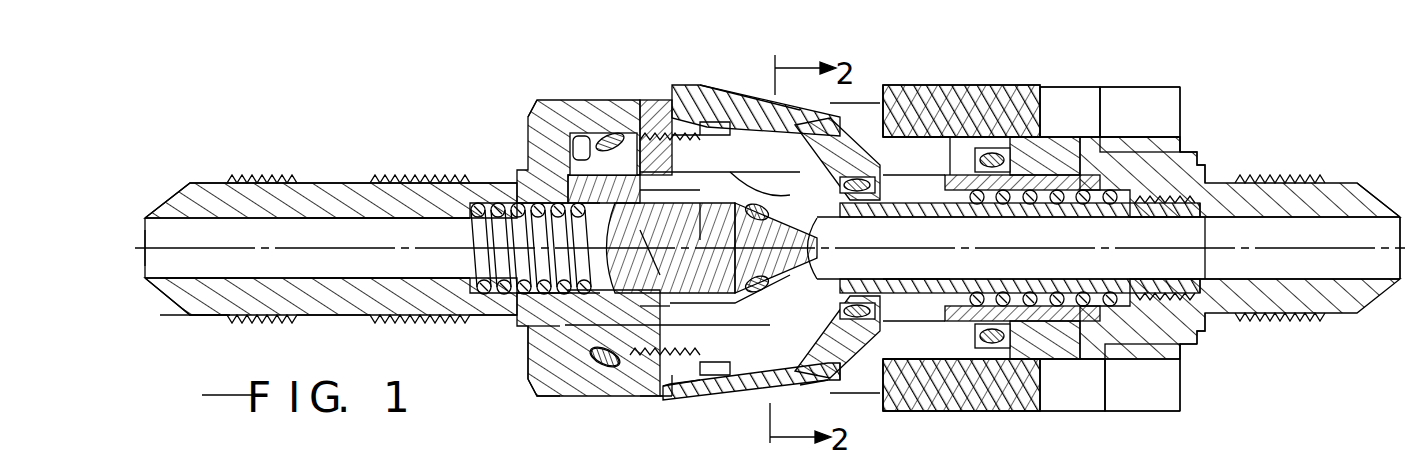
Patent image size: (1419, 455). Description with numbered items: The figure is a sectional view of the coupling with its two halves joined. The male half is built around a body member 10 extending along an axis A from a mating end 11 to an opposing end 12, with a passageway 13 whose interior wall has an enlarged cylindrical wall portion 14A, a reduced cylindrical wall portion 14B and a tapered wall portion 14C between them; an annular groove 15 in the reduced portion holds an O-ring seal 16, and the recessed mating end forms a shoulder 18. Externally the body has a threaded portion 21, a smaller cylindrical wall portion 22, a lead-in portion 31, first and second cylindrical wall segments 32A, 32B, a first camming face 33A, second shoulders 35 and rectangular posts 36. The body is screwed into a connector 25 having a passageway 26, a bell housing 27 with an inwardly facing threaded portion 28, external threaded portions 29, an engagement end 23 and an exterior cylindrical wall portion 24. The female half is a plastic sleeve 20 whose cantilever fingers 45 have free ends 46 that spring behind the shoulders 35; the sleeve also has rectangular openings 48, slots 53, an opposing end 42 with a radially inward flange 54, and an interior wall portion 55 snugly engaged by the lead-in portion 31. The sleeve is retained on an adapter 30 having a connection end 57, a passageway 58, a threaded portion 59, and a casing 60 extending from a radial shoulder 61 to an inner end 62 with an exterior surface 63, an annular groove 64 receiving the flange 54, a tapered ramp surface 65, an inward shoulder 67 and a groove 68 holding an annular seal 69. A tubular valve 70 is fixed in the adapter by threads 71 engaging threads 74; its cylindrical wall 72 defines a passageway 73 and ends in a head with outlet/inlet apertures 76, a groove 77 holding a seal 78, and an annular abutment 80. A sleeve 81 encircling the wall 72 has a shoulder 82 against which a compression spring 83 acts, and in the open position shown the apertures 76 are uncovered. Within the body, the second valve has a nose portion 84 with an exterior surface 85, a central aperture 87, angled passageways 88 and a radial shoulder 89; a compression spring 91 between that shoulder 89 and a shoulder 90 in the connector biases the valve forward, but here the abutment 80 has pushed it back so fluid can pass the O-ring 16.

The body member 10 is at (576, 120).
The mating end 11 is at (940, 85).
The opposing end 12 is at (545, 140).
The passageway 13 is at (700, 280).
The enlarged cylindrical wall portion 14A is at (600, 133).
The reduced cylindrical wall portion 14B is at (760, 338).
The tapered wall portion 14C is at (728, 192).
The annular groove 15 is at (900, 100).
The O-ring seal 16 is at (872, 292).
The shoulder 18 is at (961, 381).
The sleeve 20 is at (680, 78).
The threaded portion 21 is at (656, 100).
The cylindrical wall portion 22 is at (637, 303).
The engagement end 23 is at (742, 380).
The exterior cylindrical wall portion 24 is at (684, 400).
The connector 25 is at (330, 160).
The passageway 26 is at (212, 287).
The bell housing 27 is at (530, 390).
The inwardly facing threaded portion 28 is at (650, 398).
The threaded portions 29 is at (258, 175).
The adapter 30 is at (1222, 140).
The lead-in portion 31 is at (878, 412).
The first cylindrical wall segment 32A is at (706, 104).
The second cylindrical wall segment 32B is at (884, 100).
The first camming face 33A is at (792, 186).
The second shoulders 35 is at (832, 380).
The rectangular post 36 is at (832, 113).
The opposing end 42 is at (1192, 404).
The fingers 45 is at (752, 100).
The free end 46 is at (803, 386).
The rectangular openings 48 is at (297, 385).
The slot 53 is at (1140, 130).
The flange 54 is at (1190, 370).
The interior wall portion 55 is at (1088, 130).
The connection end 57 is at (1392, 200).
The passageway 58 is at (1392, 288).
The threaded portion 59 is at (1296, 178).
The casing 60 is at (1098, 412).
The radial shoulder 61 is at (1212, 338).
The inner end 62 is at (988, 137).
The cylindrical exterior surface 63 is at (1139, 115).
The annular groove 64 is at (1132, 385).
The conically tapered surface 65 is at (1200, 150).
The shoulder 67 is at (1182, 100).
The annular groove 68 is at (1073, 112).
The annular seal 69 is at (998, 152).
The tubular valve 70 is at (1150, 262).
The threads 71 is at (1102, 212).
The cylindrical wall 72 is at (1042, 298).
The passageway 73 is at (976, 298).
The inwardly facing threads 74 is at (1172, 210).
The outlet/inlet apertures 76 is at (830, 243).
The annular groove 77 is at (768, 215).
The annular seal 78 is at (760, 286).
The annular abutment 80 is at (728, 270).
The sleeve 81 is at (935, 412).
The shoulder 82 is at (958, 135).
The compression spring 83 is at (988, 192).
The nose portion 84 is at (706, 310).
The cylindrical exterior surface 85 is at (672, 186).
The central aperture 87 is at (682, 262).
The angled passageways 88 is at (548, 325).
The radial annular shoulder 89 is at (705, 232).
The radial shoulder 90 is at (468, 228).
The compression spring 91 is at (476, 203).
The axis A is at (147, 240).